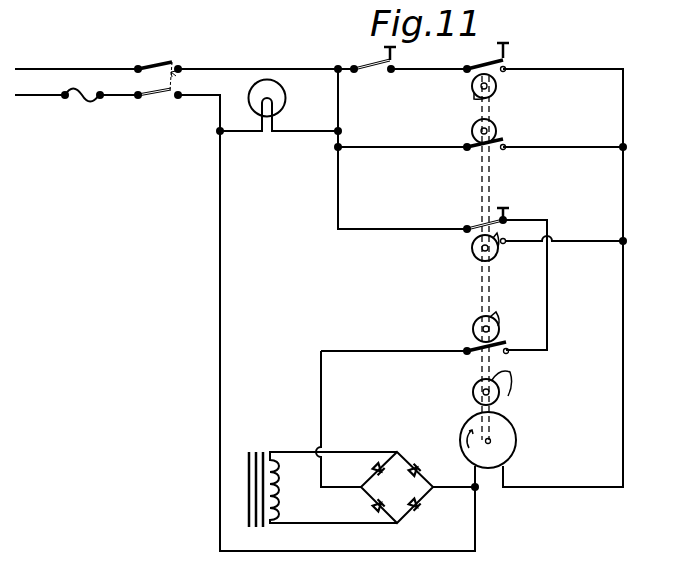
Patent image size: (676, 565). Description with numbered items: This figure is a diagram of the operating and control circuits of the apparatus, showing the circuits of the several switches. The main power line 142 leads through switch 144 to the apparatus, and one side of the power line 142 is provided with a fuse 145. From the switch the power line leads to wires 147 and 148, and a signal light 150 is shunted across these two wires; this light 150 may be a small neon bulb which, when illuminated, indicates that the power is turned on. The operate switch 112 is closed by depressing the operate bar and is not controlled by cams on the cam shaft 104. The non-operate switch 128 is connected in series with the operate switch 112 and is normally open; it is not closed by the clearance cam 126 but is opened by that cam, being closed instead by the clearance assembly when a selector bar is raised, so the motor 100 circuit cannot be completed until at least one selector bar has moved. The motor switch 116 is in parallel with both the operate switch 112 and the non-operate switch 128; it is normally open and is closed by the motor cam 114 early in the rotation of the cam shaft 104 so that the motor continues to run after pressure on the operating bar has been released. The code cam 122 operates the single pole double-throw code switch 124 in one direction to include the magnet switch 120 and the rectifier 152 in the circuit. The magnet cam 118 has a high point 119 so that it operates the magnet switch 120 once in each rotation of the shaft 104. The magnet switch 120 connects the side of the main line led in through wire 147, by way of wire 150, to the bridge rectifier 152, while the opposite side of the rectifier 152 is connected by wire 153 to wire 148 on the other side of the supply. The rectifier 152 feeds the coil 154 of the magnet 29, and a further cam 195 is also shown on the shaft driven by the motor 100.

The magnet 29 is at (248, 484).
The motor 100 is at (516, 440).
The cam shaft 104 is at (490, 178).
The operate switch 112 is at (376, 72).
The motor cam 114 is at (475, 122).
The motor switch 116 is at (505, 136).
The magnet cam 118 is at (473, 325).
The high point 119 is at (500, 315).
The magnet switch 120 is at (507, 356).
The code cam 122 is at (498, 256).
The code switch 124 is at (475, 227).
The clearance cam 126 is at (498, 88).
The non-operate switch 128 is at (510, 58).
The main power line 142 is at (58, 62).
The switch 144 is at (156, 62).
The fuse 145 is at (78, 100).
The wire 147 is at (210, 58).
The wire 148 is at (198, 100).
The signal light 150 is at (268, 90).
The bridge rectifier 152 is at (403, 450).
The wire 153 is at (446, 491).
The coil 154 is at (271, 451).
The cam 195 is at (503, 396).